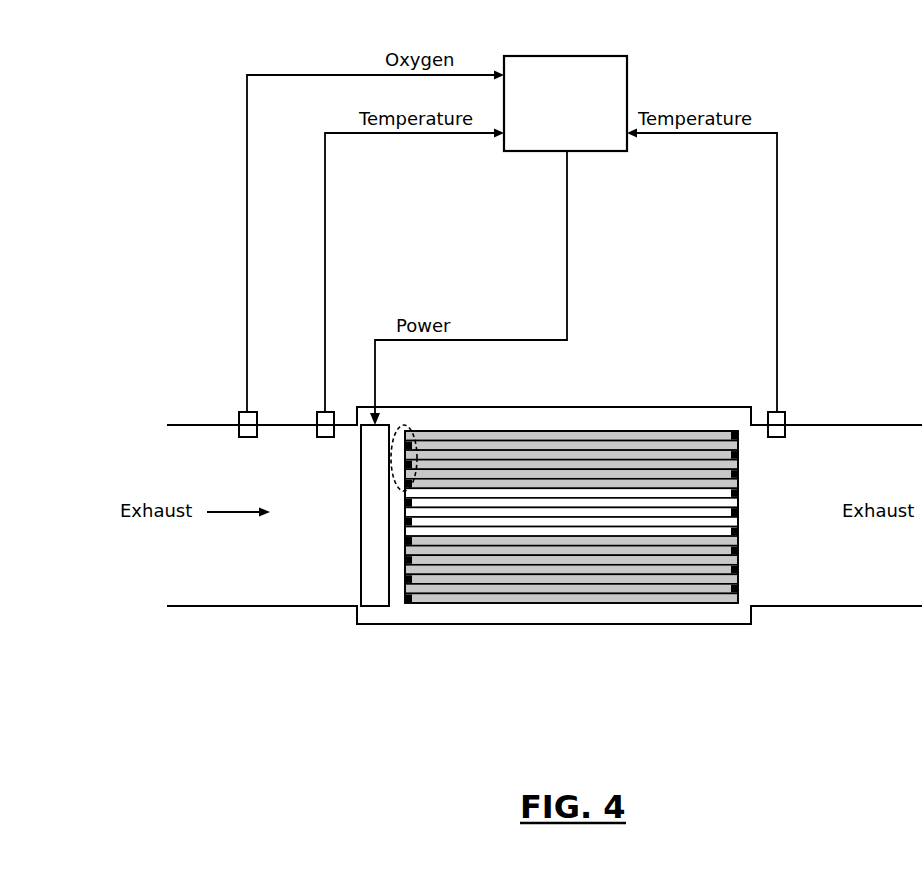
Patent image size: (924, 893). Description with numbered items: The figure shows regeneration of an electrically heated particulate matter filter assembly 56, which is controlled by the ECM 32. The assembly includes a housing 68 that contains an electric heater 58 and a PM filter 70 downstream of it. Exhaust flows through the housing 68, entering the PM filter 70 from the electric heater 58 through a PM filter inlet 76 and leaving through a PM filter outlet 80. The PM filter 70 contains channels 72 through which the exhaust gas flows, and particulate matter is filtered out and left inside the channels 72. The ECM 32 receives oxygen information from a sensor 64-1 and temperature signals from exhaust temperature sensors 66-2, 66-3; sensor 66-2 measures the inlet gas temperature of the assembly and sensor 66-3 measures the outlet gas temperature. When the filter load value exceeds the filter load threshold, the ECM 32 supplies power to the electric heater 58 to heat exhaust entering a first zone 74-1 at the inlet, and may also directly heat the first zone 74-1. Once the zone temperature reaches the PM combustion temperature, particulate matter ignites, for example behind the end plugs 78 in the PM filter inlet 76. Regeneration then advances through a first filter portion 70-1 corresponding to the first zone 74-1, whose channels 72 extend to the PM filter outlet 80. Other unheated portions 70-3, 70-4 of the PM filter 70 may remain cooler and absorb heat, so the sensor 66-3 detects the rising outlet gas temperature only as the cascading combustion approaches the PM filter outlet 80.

The ECM 32 is at (567, 56).
The PM filter assembly 56 is at (544, 567).
The electric heater 58 is at (361, 452).
The oxygen sensor 64-1 is at (247, 412).
The exhaust temperature sensor 66-2 is at (325, 412).
The exhaust temperature sensor 66-3 is at (777, 412).
The housing 68 is at (565, 407).
The PM filter 70 is at (560, 529).
The first filter portion 70-1 is at (470, 455).
The unheated portion 70-3 is at (643, 513).
The unheated portion 70-4 is at (680, 572).
The channels 72 is at (482, 577).
The first zone 74-1 is at (408, 430).
The PM filter inlet 76 is at (392, 513).
The end plugs 78 is at (407, 537).
The PM filter outlet 80 is at (748, 512).